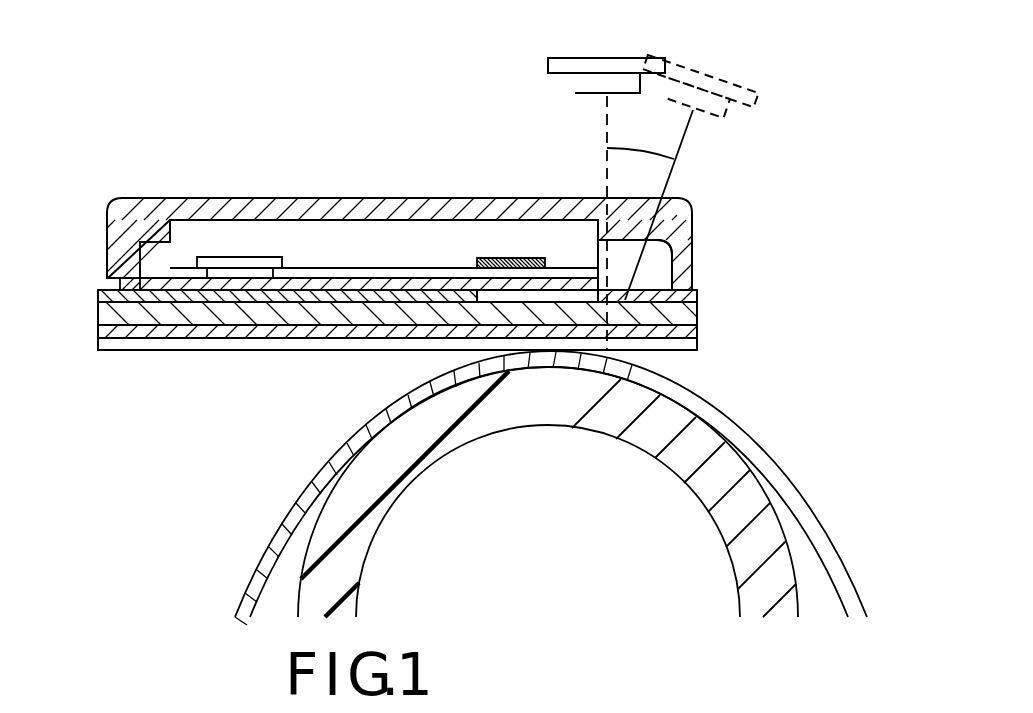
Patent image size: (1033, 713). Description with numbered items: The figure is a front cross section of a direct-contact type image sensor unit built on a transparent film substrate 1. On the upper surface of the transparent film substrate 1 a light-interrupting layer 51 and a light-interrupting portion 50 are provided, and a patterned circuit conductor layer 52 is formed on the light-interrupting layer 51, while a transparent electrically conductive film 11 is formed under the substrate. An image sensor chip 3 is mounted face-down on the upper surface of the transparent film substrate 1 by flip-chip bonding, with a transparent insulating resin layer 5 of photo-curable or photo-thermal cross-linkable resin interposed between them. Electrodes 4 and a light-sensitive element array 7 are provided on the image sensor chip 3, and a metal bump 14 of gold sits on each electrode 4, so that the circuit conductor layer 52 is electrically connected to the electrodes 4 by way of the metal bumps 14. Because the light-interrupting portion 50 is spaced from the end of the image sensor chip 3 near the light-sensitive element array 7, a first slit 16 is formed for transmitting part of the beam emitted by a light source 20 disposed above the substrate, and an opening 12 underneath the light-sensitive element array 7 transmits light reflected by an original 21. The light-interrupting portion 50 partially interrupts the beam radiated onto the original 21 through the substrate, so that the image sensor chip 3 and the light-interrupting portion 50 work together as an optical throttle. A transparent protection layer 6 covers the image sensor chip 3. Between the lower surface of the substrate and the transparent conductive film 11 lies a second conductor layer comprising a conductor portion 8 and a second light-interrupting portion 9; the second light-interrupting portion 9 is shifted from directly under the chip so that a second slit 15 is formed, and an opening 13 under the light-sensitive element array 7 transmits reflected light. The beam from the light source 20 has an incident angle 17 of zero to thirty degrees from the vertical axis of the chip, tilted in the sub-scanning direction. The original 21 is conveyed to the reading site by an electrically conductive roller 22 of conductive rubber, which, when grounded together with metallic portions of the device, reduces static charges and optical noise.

The transparent film substrate 1 is at (155, 343).
The image sensor chip 3 is at (310, 245).
The electrodes 4 is at (215, 257).
The transparent insulating resin layer 5 is at (158, 262).
The transparent protection layer 6 is at (267, 205).
The light-sensitive element array 7 is at (490, 257).
The conductor portion 8 is at (232, 318).
The second light-interrupting portion 9 is at (697, 330).
The transparent electrically conductive film 11 is at (260, 331).
The opening 12 is at (563, 297).
The opening 13 is at (497, 330).
The metal bump 14 is at (182, 215).
The second slit 15 is at (640, 338).
The first slit 16 is at (665, 258).
The incident angle 17 is at (650, 223).
The light source 20 is at (625, 67).
The original 21 is at (267, 563).
The electrically conductive roller 22 is at (347, 512).
The light-interrupting portion 50 is at (690, 296).
The light-interrupting layer 51 is at (98, 295).
The circuit conductor layer 52 is at (108, 278).